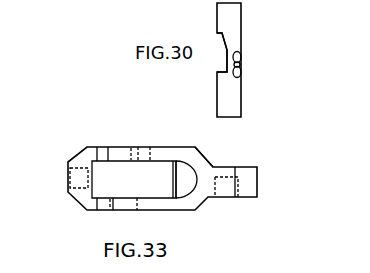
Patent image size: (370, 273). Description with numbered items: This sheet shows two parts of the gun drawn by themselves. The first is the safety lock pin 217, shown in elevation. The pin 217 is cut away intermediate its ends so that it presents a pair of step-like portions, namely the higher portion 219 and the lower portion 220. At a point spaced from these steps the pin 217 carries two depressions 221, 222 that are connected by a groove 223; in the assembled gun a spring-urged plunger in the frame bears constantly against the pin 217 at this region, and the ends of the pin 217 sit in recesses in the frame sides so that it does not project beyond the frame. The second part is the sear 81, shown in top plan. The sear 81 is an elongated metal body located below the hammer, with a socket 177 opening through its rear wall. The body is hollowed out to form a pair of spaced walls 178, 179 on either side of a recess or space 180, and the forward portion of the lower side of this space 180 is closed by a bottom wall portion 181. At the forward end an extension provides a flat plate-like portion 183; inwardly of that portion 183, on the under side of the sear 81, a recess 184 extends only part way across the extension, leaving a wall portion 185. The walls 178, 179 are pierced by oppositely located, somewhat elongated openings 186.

In FIG. 30, the safety lock pin 217 is at (242, 30).
In FIG. 30, the higher portion 219 is at (221, 39).
In FIG. 30, the lower portion 220 is at (227, 59).
In FIG. 30, the depression 221 is at (241, 54).
In FIG. 30, the depression 222 is at (241, 73).
In FIG. 30, the groove 223 is at (241, 63).
In FIG. 33, the sear 81 is at (87, 147).
In FIG. 33, the socket 177 is at (68, 179).
In FIG. 33, the wall 178 is at (149, 153).
In FIG. 33, the wall 179 is at (159, 205).
In FIG. 33, the recess 180 is at (118, 172).
In FIG. 33, the bottom wall portion 181 is at (184, 175).
In FIG. 33, the flat plate-like portion 183 is at (246, 170).
In FIG. 33, the recess 184 is at (236, 198).
In FIG. 33, the wall portion 185 is at (225, 171).
In FIG. 33, the elongated openings 186 is at (131, 153).